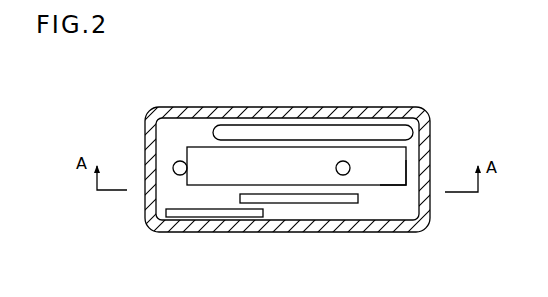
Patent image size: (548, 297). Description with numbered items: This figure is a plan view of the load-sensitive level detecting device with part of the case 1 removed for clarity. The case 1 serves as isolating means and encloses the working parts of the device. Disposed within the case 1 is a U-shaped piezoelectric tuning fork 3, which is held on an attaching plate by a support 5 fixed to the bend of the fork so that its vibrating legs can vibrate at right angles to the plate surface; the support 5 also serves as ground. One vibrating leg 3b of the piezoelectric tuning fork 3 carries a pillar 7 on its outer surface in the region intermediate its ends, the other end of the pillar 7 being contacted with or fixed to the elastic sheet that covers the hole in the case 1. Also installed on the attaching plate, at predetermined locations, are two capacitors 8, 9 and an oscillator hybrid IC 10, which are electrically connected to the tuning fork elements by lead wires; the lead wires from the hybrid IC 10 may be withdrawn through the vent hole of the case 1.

The case 1 is at (232, 107).
The piezoelectric tuning fork 3 is at (201, 144).
The vibrating leg 3b is at (389, 185).
The support 5 is at (176, 175).
The pillar 7 is at (347, 162).
The capacitor 8 is at (220, 218).
The capacitor 9 is at (313, 203).
The oscillator hybrid IC 10 is at (310, 137).